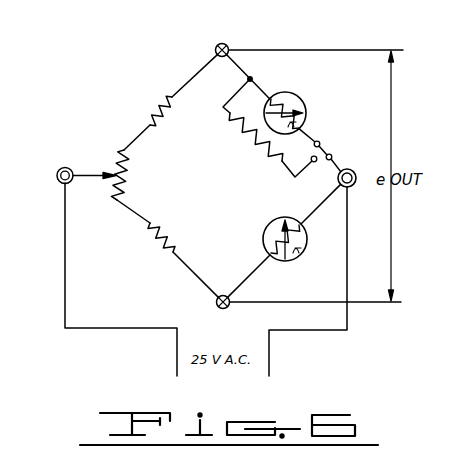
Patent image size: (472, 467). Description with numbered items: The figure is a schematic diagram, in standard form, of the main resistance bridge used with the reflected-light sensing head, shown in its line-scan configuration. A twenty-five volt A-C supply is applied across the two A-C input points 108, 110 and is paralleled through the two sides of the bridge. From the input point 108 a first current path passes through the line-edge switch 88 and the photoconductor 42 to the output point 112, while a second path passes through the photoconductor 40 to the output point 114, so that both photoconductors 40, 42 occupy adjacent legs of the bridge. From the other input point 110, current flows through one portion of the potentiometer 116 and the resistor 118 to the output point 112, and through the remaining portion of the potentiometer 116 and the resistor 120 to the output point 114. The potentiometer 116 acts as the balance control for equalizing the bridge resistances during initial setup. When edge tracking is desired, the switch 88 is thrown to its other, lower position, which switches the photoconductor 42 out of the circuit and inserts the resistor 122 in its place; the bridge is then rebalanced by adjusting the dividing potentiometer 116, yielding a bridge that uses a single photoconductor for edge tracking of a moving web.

The A-C input point 110 is at (64, 166).
The output point 112 is at (225, 44).
The output point 114 is at (216, 302).
The potentiometer 116 is at (128, 176).
The resistor 118 is at (164, 113).
The resistor 120 is at (166, 233).
The resistor 122 is at (246, 143).
The photoconductor 40 is at (267, 225).
The photoconductor 42 is at (298, 95).
The line-edge switch 88 is at (333, 150).
The A-C input point 108 is at (353, 160).